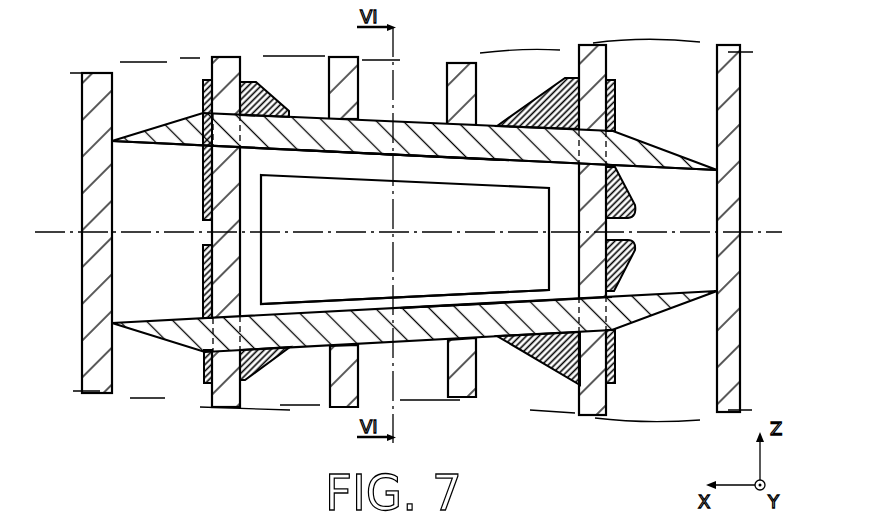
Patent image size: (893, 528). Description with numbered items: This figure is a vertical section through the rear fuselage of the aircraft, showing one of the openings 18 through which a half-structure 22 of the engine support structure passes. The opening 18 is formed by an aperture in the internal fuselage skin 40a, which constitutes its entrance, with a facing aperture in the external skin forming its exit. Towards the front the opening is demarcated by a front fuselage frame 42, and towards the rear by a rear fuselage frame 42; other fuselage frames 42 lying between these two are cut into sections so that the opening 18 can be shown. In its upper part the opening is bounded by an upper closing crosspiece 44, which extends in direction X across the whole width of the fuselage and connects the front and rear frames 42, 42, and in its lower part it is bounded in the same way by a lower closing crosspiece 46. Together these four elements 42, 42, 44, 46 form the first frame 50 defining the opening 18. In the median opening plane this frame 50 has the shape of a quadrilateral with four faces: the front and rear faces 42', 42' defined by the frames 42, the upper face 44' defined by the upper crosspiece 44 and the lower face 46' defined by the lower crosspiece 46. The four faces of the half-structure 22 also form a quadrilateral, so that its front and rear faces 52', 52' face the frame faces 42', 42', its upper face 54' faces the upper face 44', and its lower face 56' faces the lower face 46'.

The opening 18 is at (302, 303).
The half-structure 22 is at (432, 274).
The internal fuselage skin 40a is at (128, 185).
The fuselage frame 42 is at (408, 223).
The front and rear faces of the frame 42' is at (409, 233).
The upper closing crosspiece 44 is at (414, 125).
The upper face of the frame 44' is at (414, 177).
The lower closing crosspiece 46 is at (414, 340).
The lower face of the frame 46' is at (506, 282).
The first frame 50 is at (445, 165).
The front and rear faces of the half-structure 52' is at (434, 231).
The upper face of the half-structure 54' is at (350, 190).
The lower face of the half-structure 56' is at (460, 344).